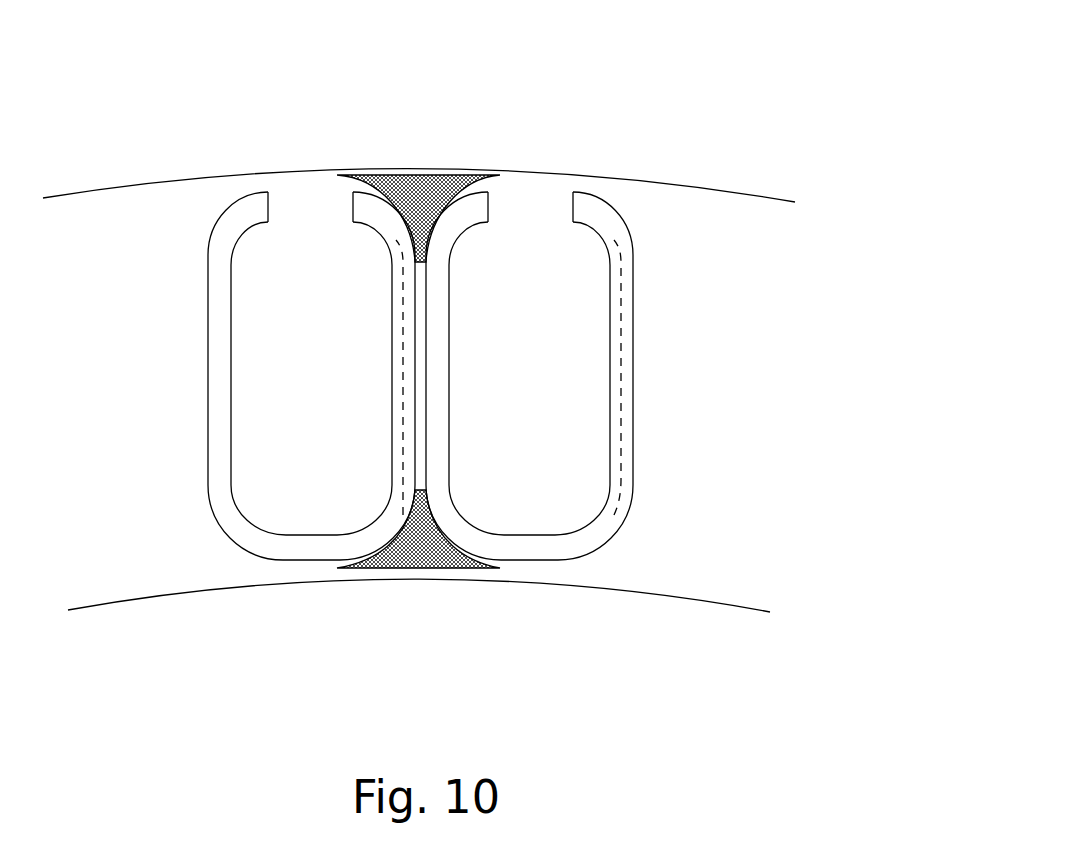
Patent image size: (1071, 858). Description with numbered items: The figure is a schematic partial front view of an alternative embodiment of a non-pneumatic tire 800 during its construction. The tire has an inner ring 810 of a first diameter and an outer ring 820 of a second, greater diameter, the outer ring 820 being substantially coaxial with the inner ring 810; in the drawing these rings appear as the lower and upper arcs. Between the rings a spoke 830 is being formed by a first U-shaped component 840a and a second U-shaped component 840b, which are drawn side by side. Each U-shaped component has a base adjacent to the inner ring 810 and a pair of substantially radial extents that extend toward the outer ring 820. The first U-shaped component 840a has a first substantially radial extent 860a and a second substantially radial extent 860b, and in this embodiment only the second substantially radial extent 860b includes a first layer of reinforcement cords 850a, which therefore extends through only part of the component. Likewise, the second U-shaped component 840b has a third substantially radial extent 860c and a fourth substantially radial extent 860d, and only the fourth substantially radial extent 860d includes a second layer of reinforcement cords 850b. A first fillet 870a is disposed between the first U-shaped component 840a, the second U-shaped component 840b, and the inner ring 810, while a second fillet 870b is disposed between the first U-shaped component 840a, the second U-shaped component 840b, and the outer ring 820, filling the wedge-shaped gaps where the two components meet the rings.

The non-pneumatic tire 800 is at (737, 88).
The inner ring 810 is at (720, 608).
The outer ring 820 is at (772, 195).
The spoke 830 is at (477, 134).
The first U-shaped component 840a is at (297, 552).
The second U-shaped component 840b is at (537, 547).
The first layer of reinforcement cords 850a is at (402, 410).
The second layer of reinforcement cords 850b is at (622, 353).
The first substantially radial extent 860a is at (208, 427).
The second substantially radial extent 860b is at (390, 333).
The third substantially radial extent 860c is at (448, 330).
The fourth substantially radial extent 860d is at (633, 452).
The first fillet 870a is at (422, 550).
The second fillet 870b is at (418, 213).